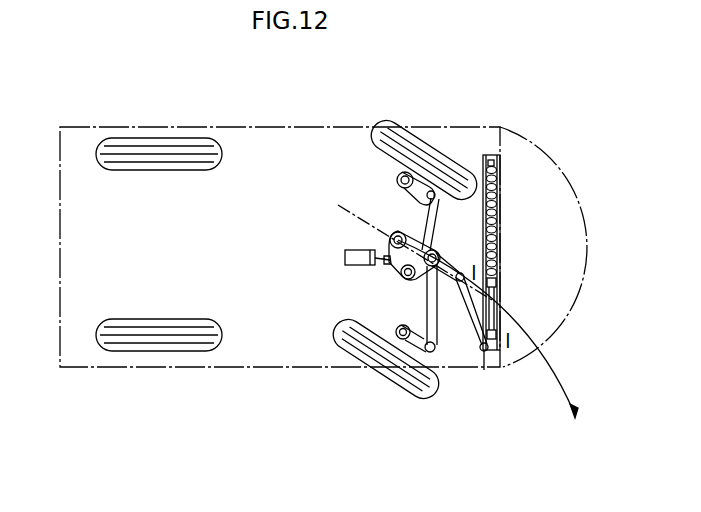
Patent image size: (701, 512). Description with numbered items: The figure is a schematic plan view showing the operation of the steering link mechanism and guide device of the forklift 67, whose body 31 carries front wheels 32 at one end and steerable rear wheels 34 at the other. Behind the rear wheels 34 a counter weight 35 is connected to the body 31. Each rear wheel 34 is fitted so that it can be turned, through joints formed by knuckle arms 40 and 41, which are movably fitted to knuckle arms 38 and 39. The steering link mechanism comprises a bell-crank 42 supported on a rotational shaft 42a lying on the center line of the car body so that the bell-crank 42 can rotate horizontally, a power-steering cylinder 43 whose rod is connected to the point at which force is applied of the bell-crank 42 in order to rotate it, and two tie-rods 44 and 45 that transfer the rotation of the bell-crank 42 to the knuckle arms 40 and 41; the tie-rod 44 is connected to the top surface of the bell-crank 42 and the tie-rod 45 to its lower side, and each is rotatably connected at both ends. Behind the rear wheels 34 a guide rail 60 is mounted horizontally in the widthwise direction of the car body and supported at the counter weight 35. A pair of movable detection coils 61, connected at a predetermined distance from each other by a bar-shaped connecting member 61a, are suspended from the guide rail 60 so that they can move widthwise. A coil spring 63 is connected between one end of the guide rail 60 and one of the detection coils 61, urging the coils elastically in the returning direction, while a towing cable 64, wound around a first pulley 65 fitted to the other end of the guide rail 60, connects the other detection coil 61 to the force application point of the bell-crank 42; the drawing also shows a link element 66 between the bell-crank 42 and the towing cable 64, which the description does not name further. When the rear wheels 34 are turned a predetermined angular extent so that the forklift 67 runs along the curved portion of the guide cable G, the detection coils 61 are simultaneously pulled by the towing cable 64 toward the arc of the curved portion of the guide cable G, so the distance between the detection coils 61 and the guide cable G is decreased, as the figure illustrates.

The body 31 is at (283, 127).
The front wheels 32 is at (156, 138).
The rear wheels 34 is at (423, 146).
The counter weight 35 is at (576, 200).
The knuckle arm 38 is at (398, 327).
The knuckle arm 39 is at (398, 174).
The knuckle arm 40 is at (409, 280).
The knuckle arm 41 is at (404, 193).
The bell-crank 42 is at (395, 272).
The rotational shaft 42a is at (390, 240).
The power-steering cylinder 43 is at (345, 256).
The tie-rod 44 is at (437, 296).
The tie-rod 45 is at (421, 216).
The guide rail 60 is at (498, 176).
The detection coils 61 is at (497, 281).
The connecting member 61a is at (498, 300).
The coil spring 63 is at (484, 156).
The towing cable 64 is at (477, 331).
The first pulley 65 is at (484, 370).
The link 66 is at (459, 272).
The forklift 67 is at (511, 110).
The guide cable G is at (560, 393).